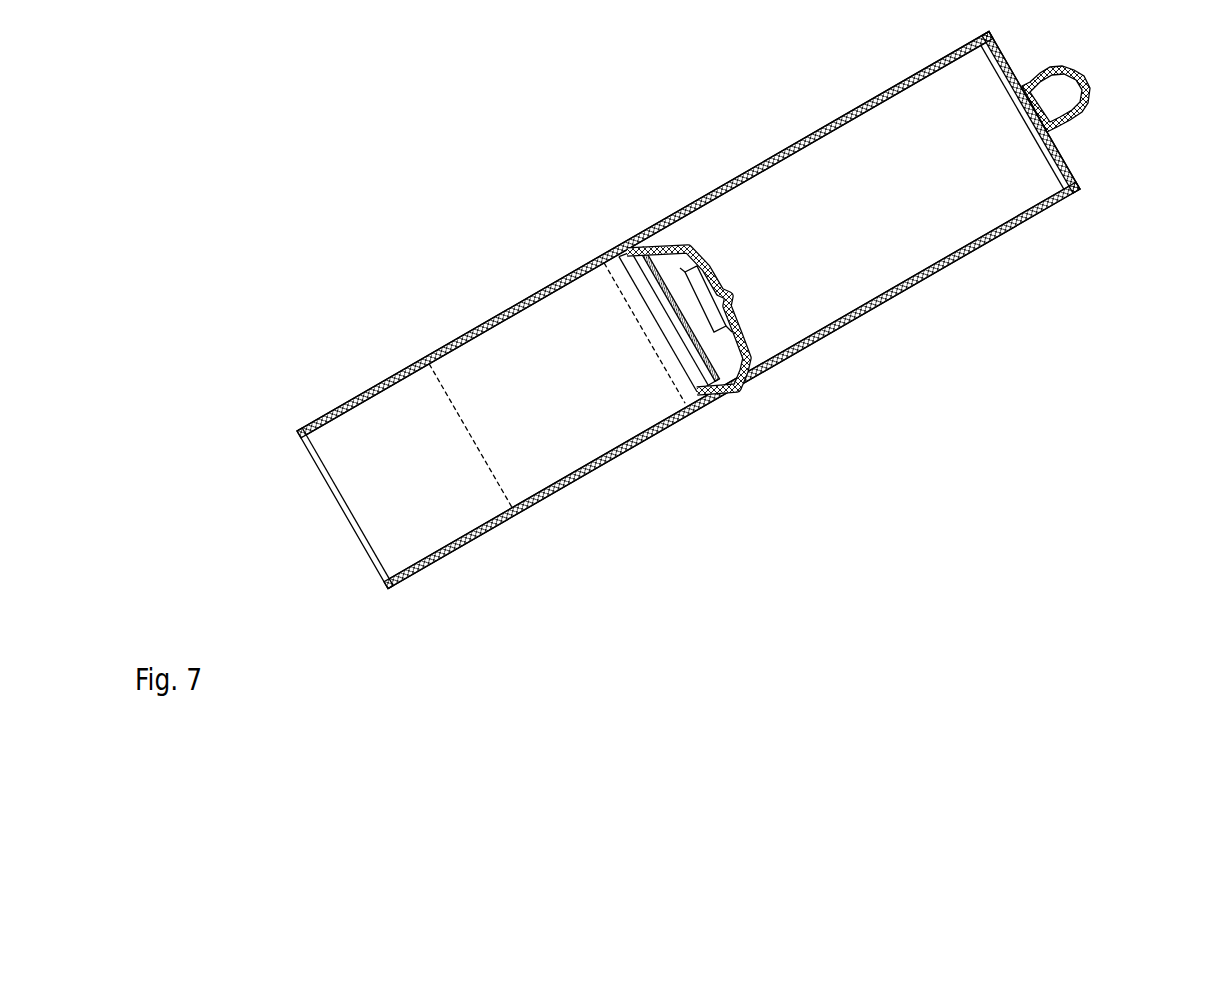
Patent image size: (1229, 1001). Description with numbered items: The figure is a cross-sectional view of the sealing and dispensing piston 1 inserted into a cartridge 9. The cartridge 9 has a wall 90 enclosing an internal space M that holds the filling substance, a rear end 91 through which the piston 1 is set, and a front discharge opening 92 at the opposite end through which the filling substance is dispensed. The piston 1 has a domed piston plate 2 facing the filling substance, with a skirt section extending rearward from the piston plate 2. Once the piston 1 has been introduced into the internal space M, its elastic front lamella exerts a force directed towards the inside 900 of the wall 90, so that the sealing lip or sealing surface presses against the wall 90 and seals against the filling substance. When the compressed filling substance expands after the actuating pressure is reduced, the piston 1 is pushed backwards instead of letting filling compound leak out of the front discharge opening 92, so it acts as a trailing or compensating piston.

The cartridge 9 is at (923, 373).
The wall 90 is at (787, 148).
The inside of the wall 900 is at (880, 107).
The rear end 91 is at (346, 517).
The front discharge opening 92 is at (1063, 92).
The internal space M is at (858, 177).
The sealing and dispensing piston 1 is at (642, 252).
The piston plate 2 is at (730, 311).